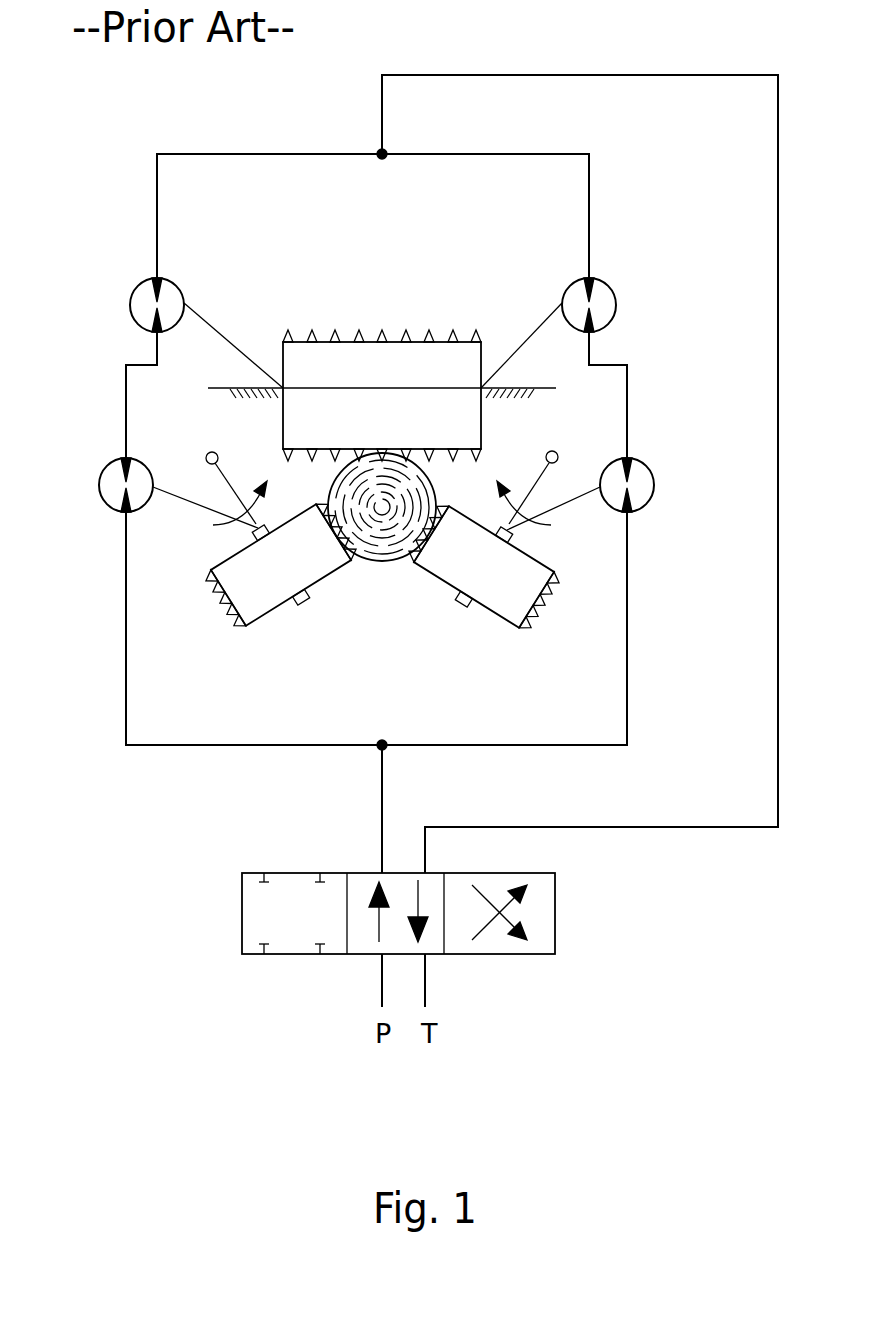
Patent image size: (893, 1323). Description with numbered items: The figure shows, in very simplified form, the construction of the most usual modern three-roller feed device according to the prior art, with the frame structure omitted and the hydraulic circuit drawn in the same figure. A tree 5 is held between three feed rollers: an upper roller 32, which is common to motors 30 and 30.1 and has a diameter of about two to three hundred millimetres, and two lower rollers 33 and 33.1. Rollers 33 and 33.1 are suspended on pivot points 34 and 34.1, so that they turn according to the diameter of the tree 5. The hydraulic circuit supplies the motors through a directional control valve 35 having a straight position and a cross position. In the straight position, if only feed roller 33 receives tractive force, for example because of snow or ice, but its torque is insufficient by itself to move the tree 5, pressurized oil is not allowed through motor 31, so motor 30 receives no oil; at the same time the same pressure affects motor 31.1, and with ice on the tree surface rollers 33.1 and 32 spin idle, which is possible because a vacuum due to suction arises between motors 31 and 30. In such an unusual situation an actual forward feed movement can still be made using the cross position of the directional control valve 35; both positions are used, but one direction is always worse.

The tree 5 is at (388, 563).
The motor 30 is at (605, 295).
The motor 30.1 is at (143, 297).
The motor 31 is at (643, 507).
The motor 31.1 is at (108, 493).
The roller 32 is at (333, 337).
The feed roller 33 is at (485, 612).
The feed roller 33.1 is at (287, 607).
The pivot point 34 is at (552, 465).
The pivot point 34.1 is at (234, 465).
The directional control valve 35 is at (540, 923).